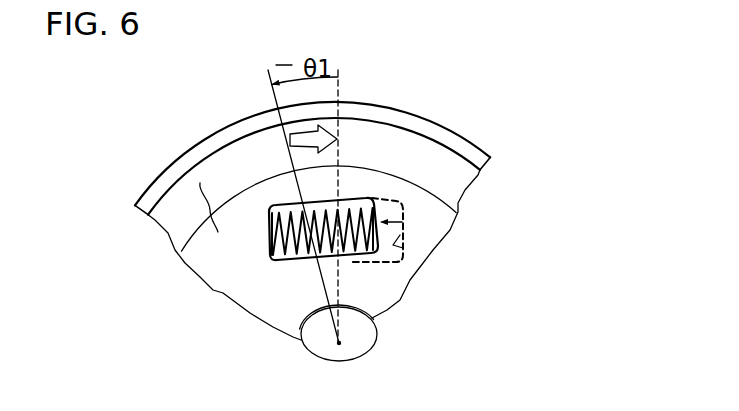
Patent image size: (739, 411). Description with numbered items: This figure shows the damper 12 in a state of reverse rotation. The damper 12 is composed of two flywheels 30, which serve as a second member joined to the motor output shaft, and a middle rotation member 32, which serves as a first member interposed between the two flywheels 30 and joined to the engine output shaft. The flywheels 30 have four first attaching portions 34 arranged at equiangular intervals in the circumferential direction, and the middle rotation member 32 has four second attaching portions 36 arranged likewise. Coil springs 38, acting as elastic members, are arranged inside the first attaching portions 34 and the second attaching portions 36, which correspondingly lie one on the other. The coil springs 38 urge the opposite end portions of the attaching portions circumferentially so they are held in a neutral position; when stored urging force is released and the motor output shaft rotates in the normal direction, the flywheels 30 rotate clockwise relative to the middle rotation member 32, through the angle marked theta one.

The damper 12 is at (163, 103).
The flywheels 30 is at (218, 232).
The middle rotation member 32 is at (268, 212).
The first attaching portions 34 is at (230, 204).
The second attaching portions 36 is at (405, 228).
The coil springs 38 is at (356, 198).